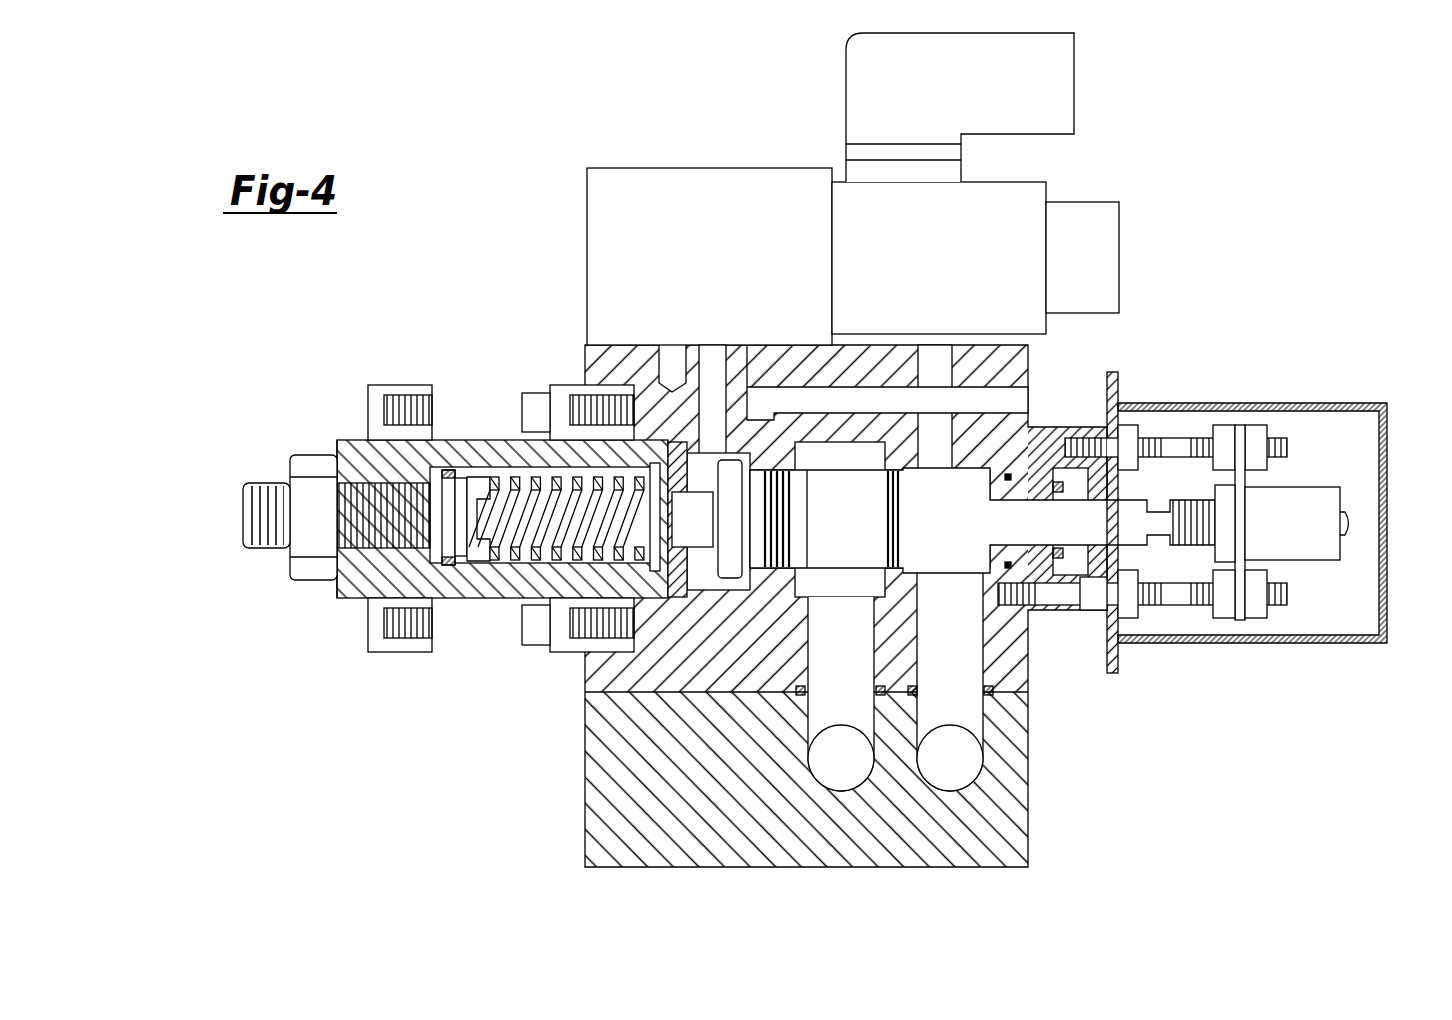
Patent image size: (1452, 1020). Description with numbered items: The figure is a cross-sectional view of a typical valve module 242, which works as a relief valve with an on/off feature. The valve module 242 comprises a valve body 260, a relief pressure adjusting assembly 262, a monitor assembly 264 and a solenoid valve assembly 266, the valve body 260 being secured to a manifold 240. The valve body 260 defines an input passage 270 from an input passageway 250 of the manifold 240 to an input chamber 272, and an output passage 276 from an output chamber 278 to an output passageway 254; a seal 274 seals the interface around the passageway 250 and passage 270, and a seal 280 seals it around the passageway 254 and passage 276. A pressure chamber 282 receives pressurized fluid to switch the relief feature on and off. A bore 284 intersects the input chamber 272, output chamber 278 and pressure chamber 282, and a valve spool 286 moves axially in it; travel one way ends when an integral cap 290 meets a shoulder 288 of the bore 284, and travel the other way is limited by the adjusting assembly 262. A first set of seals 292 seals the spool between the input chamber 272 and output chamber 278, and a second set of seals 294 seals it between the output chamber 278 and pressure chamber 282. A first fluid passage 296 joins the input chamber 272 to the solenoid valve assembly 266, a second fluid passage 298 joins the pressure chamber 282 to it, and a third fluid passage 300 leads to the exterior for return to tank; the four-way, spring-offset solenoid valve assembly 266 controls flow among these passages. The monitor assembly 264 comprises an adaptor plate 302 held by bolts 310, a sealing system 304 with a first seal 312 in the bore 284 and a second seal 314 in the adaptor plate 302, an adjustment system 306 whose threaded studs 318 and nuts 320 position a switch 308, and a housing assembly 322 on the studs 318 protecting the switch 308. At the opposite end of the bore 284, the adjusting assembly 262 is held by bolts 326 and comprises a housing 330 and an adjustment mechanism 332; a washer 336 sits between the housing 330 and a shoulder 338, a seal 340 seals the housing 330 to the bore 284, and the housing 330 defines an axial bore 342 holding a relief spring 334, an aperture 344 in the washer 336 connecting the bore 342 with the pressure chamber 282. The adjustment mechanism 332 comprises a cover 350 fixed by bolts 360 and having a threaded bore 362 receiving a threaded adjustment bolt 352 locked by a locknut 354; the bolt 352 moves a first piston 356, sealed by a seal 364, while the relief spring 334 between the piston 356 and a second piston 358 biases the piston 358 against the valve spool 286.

The manifold 240 is at (1030, 768).
The valve module 242 is at (427, 260).
The input passageway 250 is at (929, 774).
The output passageway 254 is at (820, 775).
The valve body 260 is at (595, 668).
The relief pressure adjusting assembly 262 is at (365, 341).
The monitor assembly 264 is at (1269, 365).
The solenoid valve assembly 266 is at (663, 105).
The input passage 270 is at (927, 647).
The input chamber 272 is at (952, 482).
The seal 274 is at (992, 694).
The output passage 276 is at (812, 653).
The output chamber 278 is at (817, 474).
The seal 280 is at (800, 694).
The pressure chamber 282 is at (685, 395).
The bore 284 is at (548, 630).
The valve spool 286 is at (825, 552).
The shoulder 288 is at (740, 585).
The integral cap 290 is at (720, 350).
The first set of seals 292 is at (903, 470).
The second set of seals 294 is at (740, 470).
The first fluid passage 296 is at (998, 393).
The second fluid passage 298 is at (700, 347).
The third fluid passage 300 is at (662, 435).
The adaptor plate 302 is at (1080, 602).
The sealing system 304 is at (1070, 443).
The adjustment system 306 is at (1196, 384).
The switch 308 is at (1265, 538).
The bolts 310 is at (1095, 603).
The first seal 312 is at (1008, 477).
The second seal 314 is at (1068, 448).
The threaded studs 318 is at (1147, 594).
The nuts 320 is at (1248, 580).
The housing assembly 322 is at (1391, 470).
The bolts 326 is at (520, 393).
The housing 330 is at (400, 400).
The adjustment mechanism 332 is at (238, 482).
The relief spring 334 is at (560, 570).
The washer 336 is at (590, 652).
The shoulder 338 is at (672, 580).
The seal 340 is at (520, 470).
The axial bore 342 is at (345, 594).
The aperture 344 is at (717, 490).
The cover 350 is at (363, 497).
The threaded adjustment bolt 352 is at (250, 527).
The locknut 354 is at (313, 507).
The first piston 356 is at (430, 540).
The piston 358 is at (674, 530).
The bolts 360 is at (355, 618).
The threaded bore 362 is at (283, 487).
The seal 364 is at (400, 490).